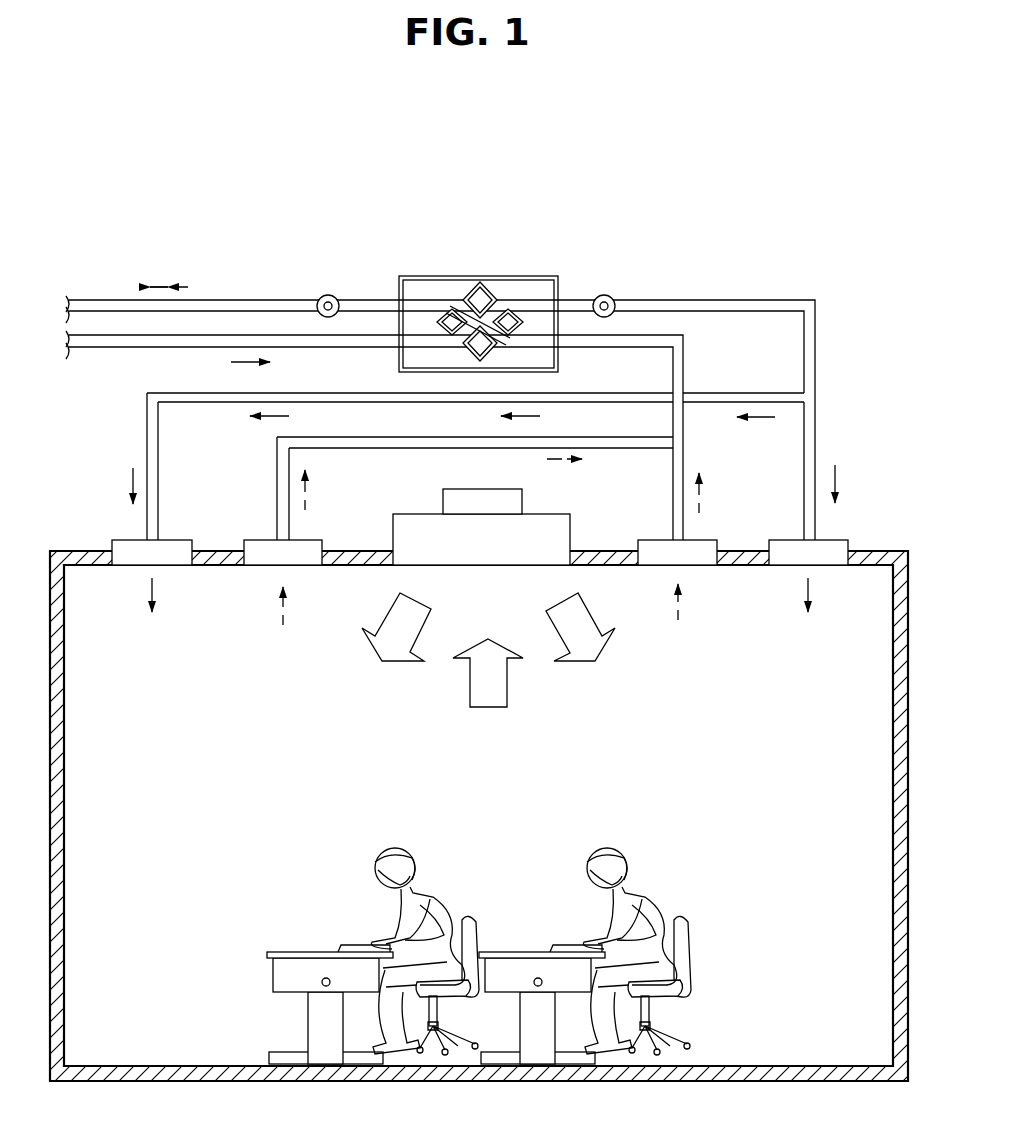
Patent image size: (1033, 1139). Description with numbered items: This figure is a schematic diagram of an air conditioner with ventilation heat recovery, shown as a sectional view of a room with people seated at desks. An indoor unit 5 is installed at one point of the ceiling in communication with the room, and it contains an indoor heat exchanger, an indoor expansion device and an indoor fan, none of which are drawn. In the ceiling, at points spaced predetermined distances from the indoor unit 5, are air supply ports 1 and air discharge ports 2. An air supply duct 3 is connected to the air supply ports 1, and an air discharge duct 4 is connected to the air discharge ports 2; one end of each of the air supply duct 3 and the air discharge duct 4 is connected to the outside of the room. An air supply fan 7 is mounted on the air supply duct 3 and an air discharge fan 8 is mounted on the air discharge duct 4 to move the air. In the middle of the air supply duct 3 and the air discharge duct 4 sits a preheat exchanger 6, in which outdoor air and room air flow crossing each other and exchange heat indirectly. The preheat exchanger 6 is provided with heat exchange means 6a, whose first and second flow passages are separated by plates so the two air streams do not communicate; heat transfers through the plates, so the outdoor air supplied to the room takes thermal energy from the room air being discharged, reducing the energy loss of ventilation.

The air supply port 1 is at (178, 547).
The air discharge port 2 is at (310, 548).
The air supply duct 3 is at (105, 349).
The air discharge duct 4 is at (105, 298).
The indoor unit 5 is at (558, 536).
The preheat exchanger 6 is at (455, 276).
The heat exchange means 6a is at (484, 286).
The air supply fan 7 is at (604, 295).
The air discharge fan 8 is at (327, 295).